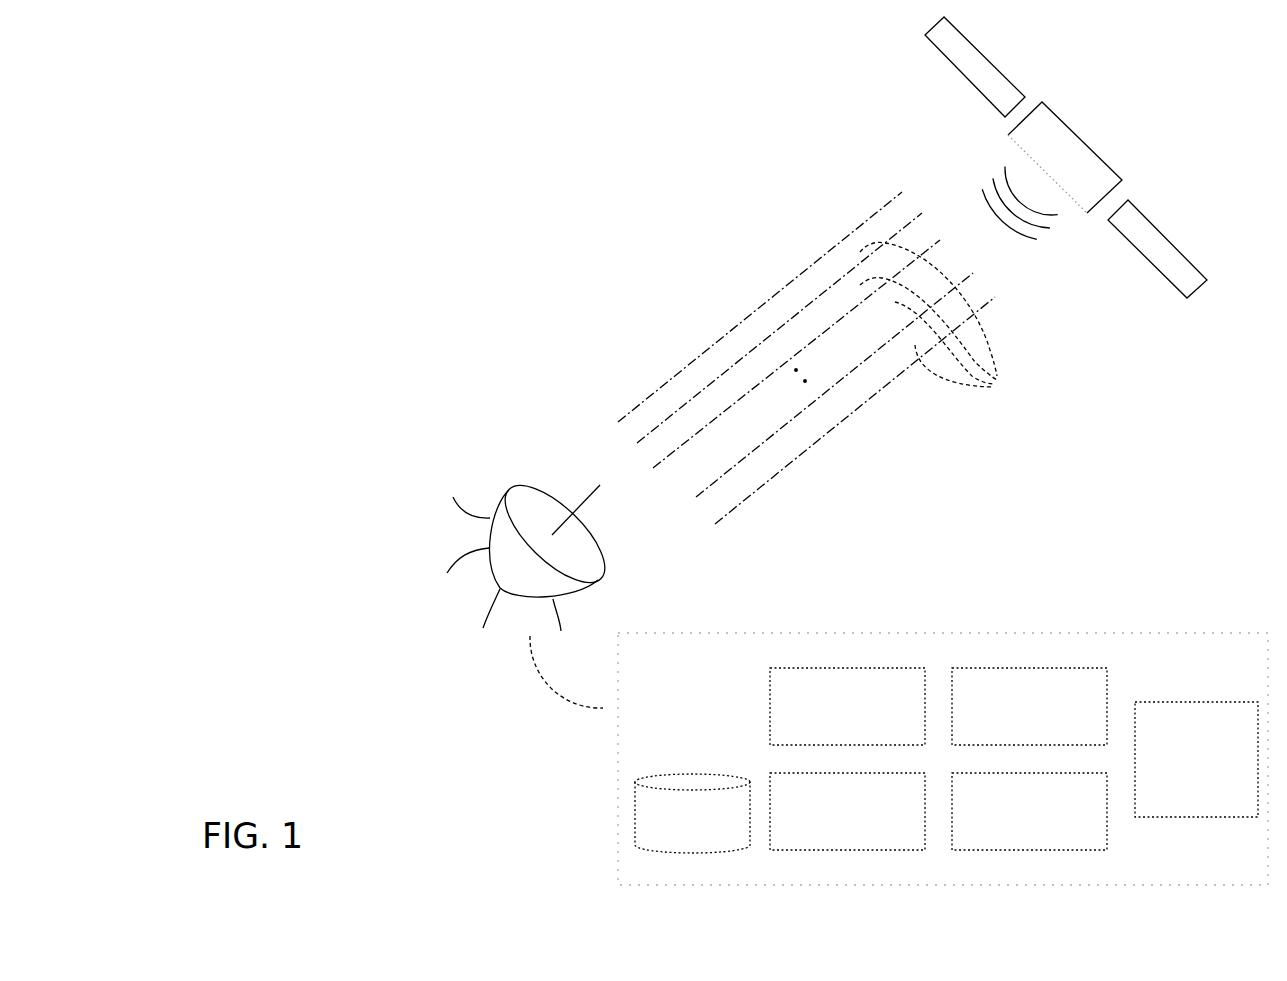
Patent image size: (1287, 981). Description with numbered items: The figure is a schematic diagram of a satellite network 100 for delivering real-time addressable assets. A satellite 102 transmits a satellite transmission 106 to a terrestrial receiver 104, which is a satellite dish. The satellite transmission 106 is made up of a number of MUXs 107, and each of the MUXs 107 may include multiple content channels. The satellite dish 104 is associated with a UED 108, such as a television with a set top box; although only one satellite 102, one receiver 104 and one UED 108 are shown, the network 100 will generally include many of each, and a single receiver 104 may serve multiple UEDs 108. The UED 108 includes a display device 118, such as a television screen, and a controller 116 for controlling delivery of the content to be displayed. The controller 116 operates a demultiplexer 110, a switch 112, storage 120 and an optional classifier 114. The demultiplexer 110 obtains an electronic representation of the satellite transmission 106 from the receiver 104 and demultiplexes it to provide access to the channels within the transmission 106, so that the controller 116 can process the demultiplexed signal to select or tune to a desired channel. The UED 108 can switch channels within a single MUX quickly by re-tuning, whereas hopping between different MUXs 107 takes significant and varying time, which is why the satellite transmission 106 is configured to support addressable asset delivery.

The satellite network 100 is at (566, 216).
The satellite 102 is at (1093, 153).
The terrestrial receiver 104 is at (527, 589).
The satellite transmission 106 is at (870, 395).
The MUXs 107 is at (946, 316).
The UED 108 is at (1202, 633).
The demultiplexer 110 is at (877, 667).
The switch 112 is at (1053, 667).
The classifier 114 is at (893, 852).
The controller 116 is at (1075, 852).
The display device 118 is at (1173, 817).
The storage 120 is at (633, 828).